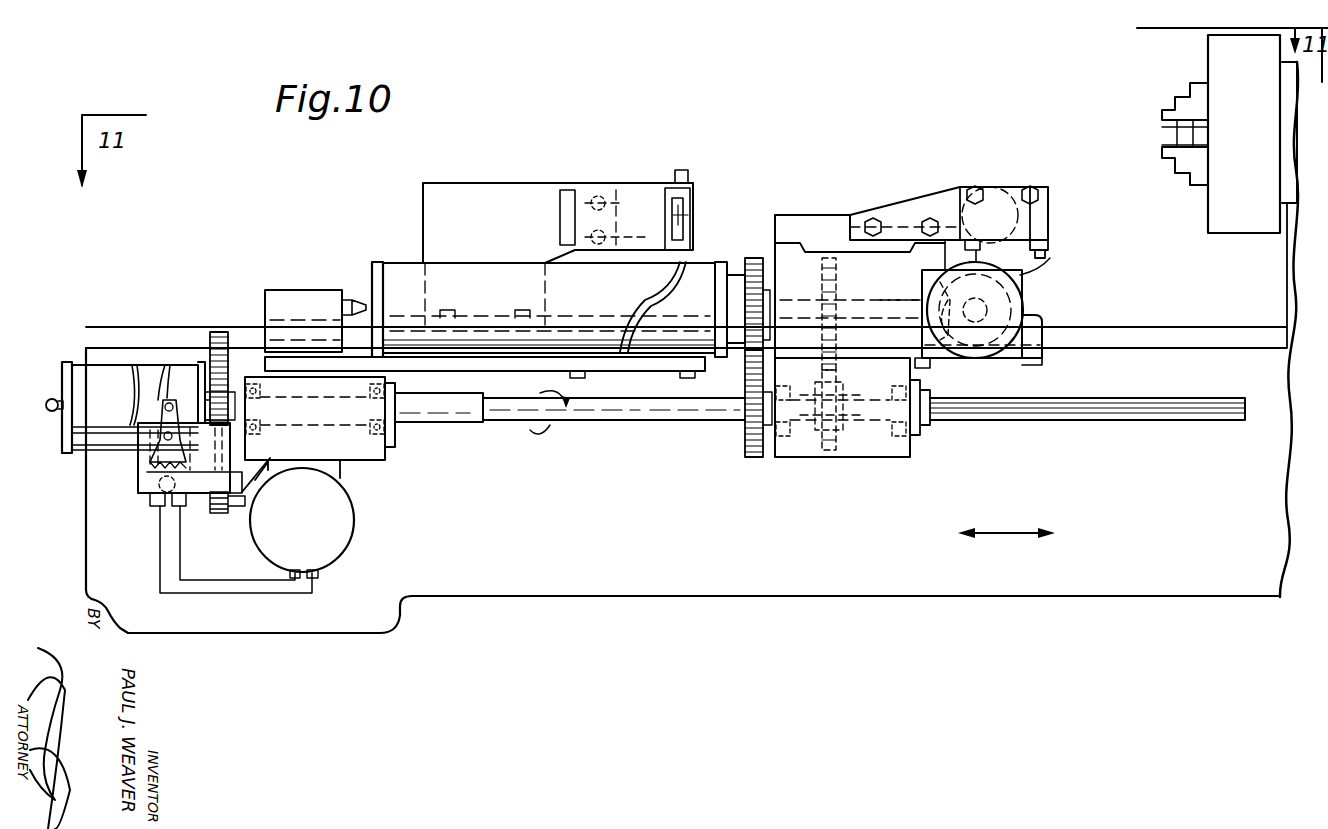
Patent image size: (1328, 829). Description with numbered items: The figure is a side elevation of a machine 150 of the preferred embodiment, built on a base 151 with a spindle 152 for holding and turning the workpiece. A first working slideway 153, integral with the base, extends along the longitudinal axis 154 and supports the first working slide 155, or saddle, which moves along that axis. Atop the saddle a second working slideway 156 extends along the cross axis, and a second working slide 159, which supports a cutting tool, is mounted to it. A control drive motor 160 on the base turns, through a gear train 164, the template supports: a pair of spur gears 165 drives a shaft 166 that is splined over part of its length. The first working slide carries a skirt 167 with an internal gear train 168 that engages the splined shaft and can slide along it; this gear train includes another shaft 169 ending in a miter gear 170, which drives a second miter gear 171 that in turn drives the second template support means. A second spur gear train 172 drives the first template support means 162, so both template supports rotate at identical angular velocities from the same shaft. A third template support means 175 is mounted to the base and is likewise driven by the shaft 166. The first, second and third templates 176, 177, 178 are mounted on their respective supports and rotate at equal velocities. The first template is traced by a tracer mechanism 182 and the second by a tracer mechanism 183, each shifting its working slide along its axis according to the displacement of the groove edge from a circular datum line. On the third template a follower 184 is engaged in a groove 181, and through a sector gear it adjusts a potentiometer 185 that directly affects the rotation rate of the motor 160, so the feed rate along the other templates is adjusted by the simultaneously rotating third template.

The machine 150 is at (692, 370).
The base 151 is at (633, 598).
The spindle 152 is at (1162, 110).
The first working slideway 153 is at (1128, 327).
The longitudinal (first) axis 154 is at (1012, 533).
The first working slide 155 is at (1020, 364).
The second working slideway 156 is at (807, 243).
The second working slide 159 is at (832, 215).
The control drive motor 160 is at (312, 542).
The first template support means 162 is at (745, 268).
The gear train 164 is at (192, 360).
The spur gears 165 is at (218, 332).
The shaft 166 is at (603, 420).
The skirt 167 is at (890, 458).
The internal gear train 168 is at (824, 430).
The shaft 169 is at (898, 304).
The miter gear 170 is at (970, 362).
The second miter gear 171 is at (1036, 316).
The second spur gear train 172 is at (757, 258).
The third template support means 175 is at (50, 398).
The first template 176 is at (395, 262).
The second template 177 is at (1050, 258).
The third template 178 is at (110, 365).
The groove 181 is at (167, 365).
The tracer mechanism 182 is at (632, 185).
The tracer mechanism 183 is at (1010, 162).
The follower 184 is at (142, 418).
The potentiometer 185 is at (160, 505).